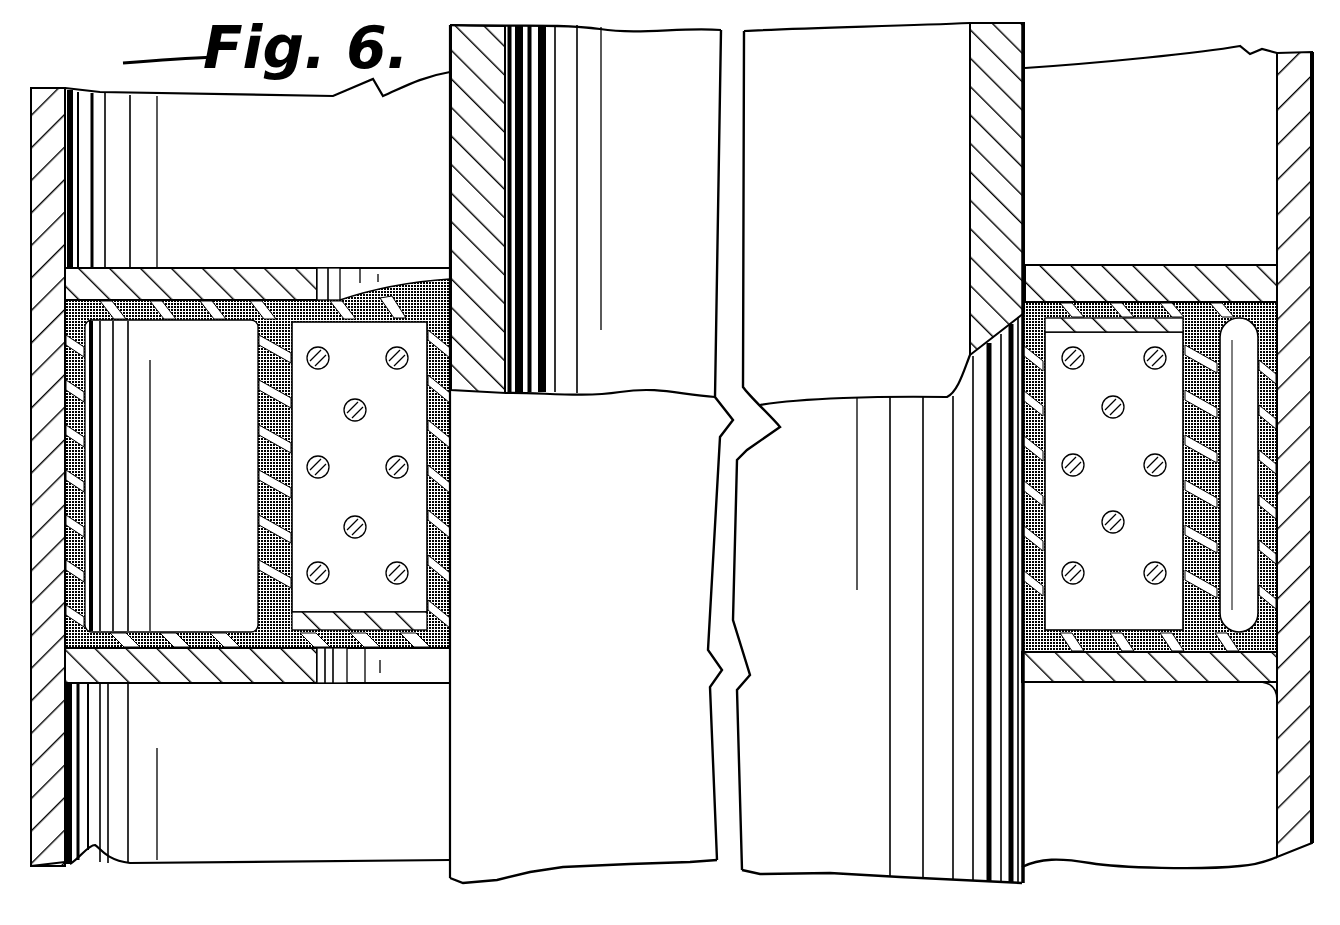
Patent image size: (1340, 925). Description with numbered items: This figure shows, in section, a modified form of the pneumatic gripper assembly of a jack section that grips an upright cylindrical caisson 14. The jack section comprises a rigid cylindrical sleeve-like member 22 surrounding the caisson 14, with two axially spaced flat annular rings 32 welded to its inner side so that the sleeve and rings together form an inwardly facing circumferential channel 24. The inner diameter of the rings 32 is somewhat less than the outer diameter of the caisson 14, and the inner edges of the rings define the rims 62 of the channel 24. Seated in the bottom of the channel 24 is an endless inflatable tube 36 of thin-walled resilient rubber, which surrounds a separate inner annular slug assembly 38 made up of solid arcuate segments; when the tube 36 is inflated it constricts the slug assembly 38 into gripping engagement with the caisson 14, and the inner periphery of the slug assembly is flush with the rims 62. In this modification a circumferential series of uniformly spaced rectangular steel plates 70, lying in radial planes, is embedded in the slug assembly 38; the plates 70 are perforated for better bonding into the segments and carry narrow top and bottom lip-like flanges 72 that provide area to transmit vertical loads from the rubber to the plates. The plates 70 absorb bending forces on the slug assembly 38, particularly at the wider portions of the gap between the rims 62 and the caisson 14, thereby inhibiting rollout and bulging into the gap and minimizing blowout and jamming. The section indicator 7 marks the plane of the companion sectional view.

The section line 7- 7 is at (1163, 238).
The caisson 14 is at (1026, 160).
The sleeve-like member 22 is at (1276, 123).
The circumferential channel 24 is at (180, 333).
The annular rings 32 is at (257, 268).
The inflatable tube 36 is at (145, 650).
The slug assembly 38 is at (462, 540).
The rims 62 is at (357, 674).
The rectangular steel plates 70 is at (413, 600).
The lip-like flanges 72 is at (380, 613).